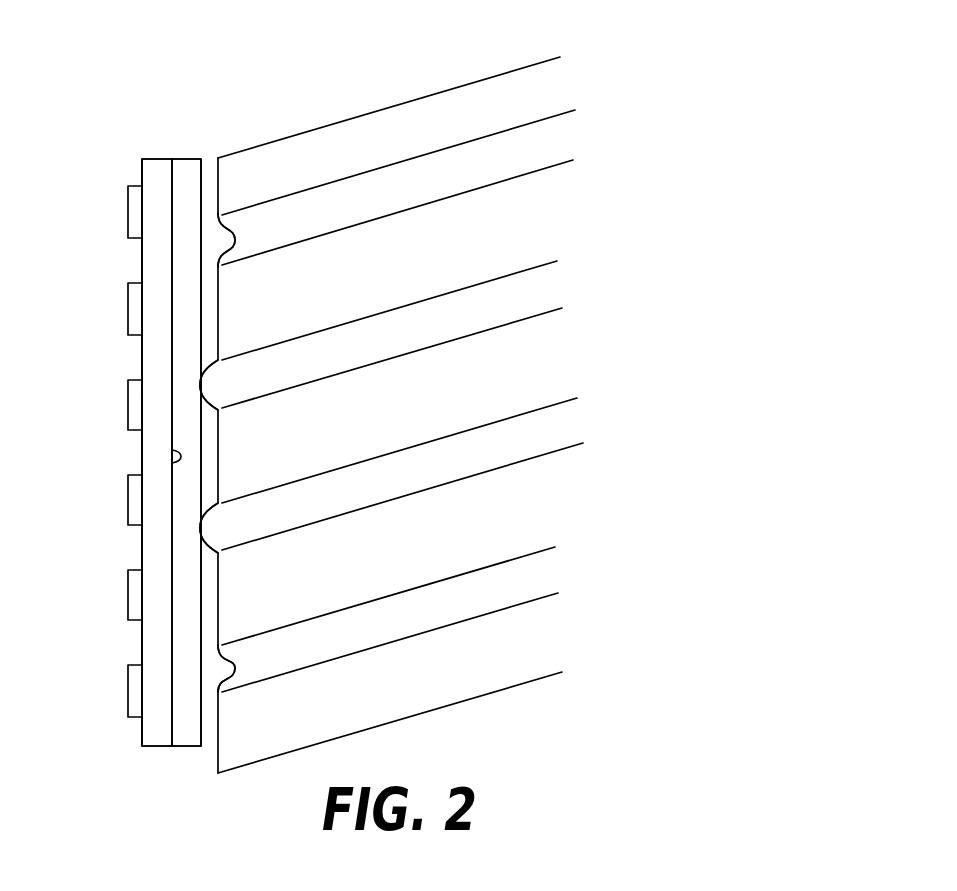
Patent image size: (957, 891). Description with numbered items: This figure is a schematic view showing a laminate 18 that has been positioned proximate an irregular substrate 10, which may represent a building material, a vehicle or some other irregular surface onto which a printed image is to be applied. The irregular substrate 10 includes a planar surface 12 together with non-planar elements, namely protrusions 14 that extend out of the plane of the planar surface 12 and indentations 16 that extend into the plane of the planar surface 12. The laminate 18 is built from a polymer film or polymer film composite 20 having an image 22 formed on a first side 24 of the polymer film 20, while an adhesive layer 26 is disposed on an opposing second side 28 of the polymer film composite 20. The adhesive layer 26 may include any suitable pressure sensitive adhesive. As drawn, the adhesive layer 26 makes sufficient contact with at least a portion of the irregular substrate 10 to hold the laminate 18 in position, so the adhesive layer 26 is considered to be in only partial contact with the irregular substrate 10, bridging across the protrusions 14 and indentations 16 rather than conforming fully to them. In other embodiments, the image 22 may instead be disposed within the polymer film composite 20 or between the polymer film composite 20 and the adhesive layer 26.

The irregular substrate 10 is at (282, 65).
The planar surface 12 is at (220, 310).
The protrusions 14 is at (200, 385).
The indentations 16 is at (237, 238).
The laminate 18 is at (108, 182).
The polymer film composite 20 is at (157, 735).
The image 22 is at (128, 520).
The first side 24 is at (143, 441).
The adhesive layer 26 is at (183, 737).
The second side 28 is at (172, 461).